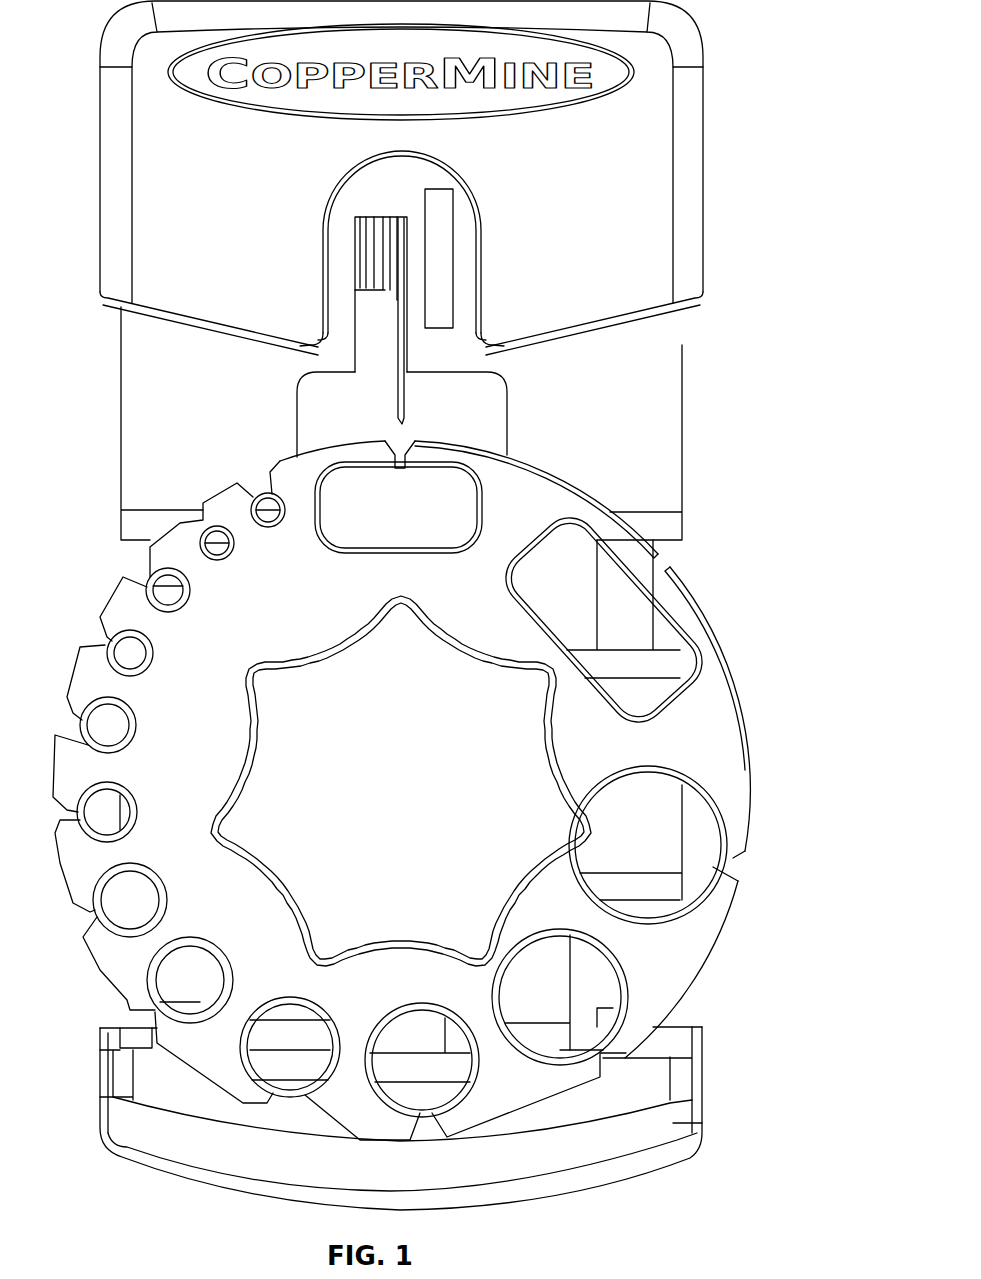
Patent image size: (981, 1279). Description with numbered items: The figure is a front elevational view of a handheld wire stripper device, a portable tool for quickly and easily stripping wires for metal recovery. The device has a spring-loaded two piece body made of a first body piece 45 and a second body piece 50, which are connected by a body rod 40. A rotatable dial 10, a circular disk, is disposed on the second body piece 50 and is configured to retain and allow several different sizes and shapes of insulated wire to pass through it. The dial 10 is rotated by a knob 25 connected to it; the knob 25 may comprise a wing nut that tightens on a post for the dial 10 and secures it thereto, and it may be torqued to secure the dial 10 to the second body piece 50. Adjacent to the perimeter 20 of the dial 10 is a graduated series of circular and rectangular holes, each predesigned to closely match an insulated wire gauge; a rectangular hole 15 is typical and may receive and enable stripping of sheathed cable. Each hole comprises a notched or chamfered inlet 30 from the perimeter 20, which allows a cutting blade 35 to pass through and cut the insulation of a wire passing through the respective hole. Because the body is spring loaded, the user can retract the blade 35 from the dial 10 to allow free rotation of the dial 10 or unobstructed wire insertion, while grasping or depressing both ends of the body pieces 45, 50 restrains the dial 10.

The rotatable dial 10 is at (733, 728).
The rectangular hole 15 is at (487, 468).
The perimeter 20 is at (753, 787).
The knob 25 is at (383, 770).
The notched inlet 30 is at (410, 445).
The cutting blade 35 is at (398, 383).
The body rod 40 is at (605, 588).
The first body piece 45 is at (141, 383).
The second body piece 50 is at (700, 1027).